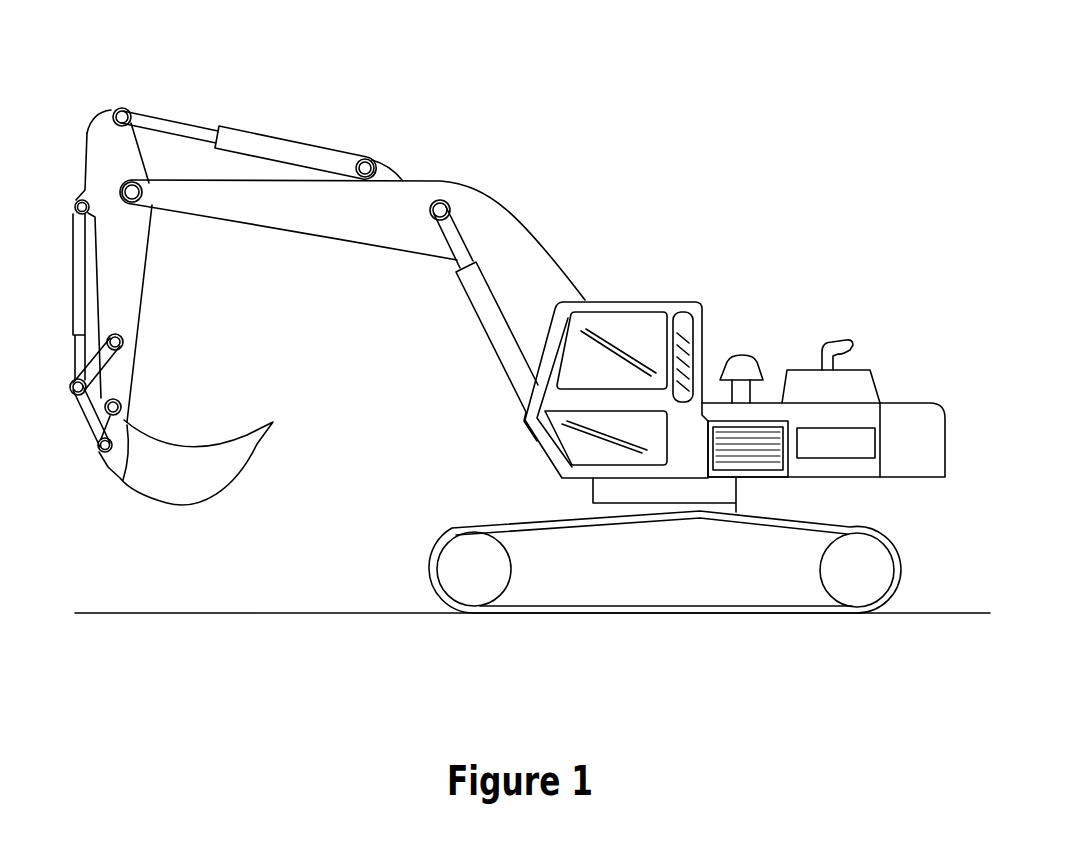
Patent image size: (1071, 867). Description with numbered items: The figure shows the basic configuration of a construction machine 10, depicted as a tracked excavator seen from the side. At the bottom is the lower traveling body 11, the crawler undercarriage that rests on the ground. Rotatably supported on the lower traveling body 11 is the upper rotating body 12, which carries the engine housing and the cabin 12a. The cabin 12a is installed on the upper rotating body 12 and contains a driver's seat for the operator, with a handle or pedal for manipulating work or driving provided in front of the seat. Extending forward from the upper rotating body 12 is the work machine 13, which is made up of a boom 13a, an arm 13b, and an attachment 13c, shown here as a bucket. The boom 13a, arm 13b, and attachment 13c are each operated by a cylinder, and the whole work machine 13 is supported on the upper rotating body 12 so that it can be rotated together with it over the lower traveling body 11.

The construction machine 10 is at (224, 53).
The lower traveling body 11 is at (480, 582).
The upper rotating body 12 is at (725, 290).
The cabin 12a is at (632, 327).
The work machine 13 is at (222, 279).
The boom 13a is at (217, 203).
The arm 13b is at (127, 292).
The attachment 13c is at (192, 462).